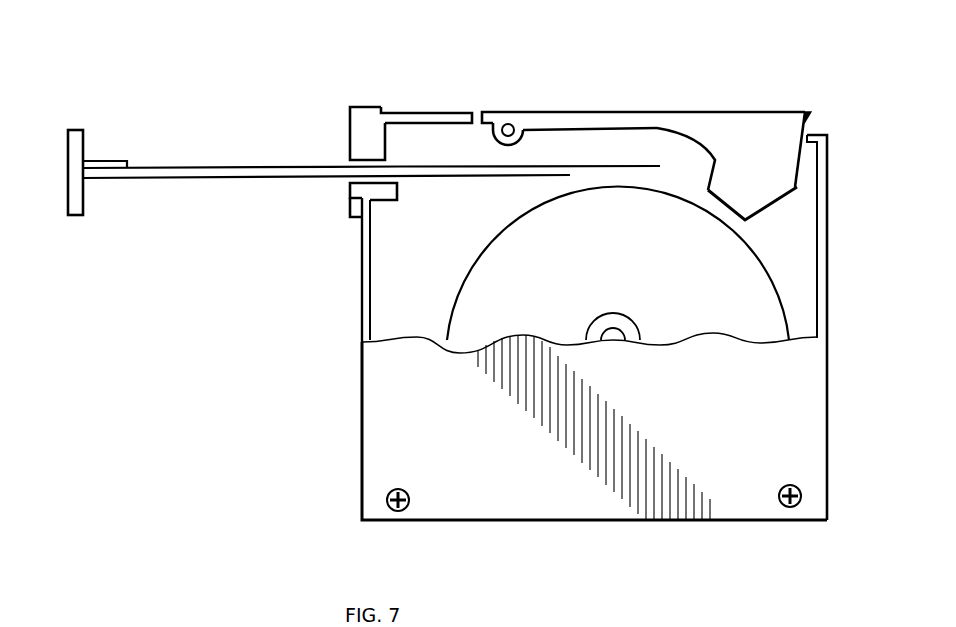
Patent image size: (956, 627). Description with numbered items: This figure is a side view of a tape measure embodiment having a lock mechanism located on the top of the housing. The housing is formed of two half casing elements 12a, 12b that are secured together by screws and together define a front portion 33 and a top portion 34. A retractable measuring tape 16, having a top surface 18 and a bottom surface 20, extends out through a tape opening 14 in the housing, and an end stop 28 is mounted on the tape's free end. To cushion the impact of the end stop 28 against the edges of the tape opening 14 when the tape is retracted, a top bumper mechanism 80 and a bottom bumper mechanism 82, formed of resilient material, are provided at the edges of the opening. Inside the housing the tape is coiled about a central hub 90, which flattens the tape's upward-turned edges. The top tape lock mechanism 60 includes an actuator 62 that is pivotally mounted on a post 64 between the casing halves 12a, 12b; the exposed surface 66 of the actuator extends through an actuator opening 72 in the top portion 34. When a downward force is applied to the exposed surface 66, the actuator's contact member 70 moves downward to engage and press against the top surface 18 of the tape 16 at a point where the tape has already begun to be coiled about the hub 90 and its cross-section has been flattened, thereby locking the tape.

The half casing element 12a is at (793, 455).
The half casing element 12b is at (383, 302).
The tape opening 14 is at (345, 166).
The retractable measuring tape 16 is at (172, 168).
The top surface 18 is at (437, 165).
The bottom surface 20 is at (200, 180).
The end stop 28 is at (73, 190).
The front portion 33 is at (360, 450).
The top portion 34 is at (817, 135).
The top tape lock mechanism 60 is at (807, 121).
The actuator 62 is at (716, 137).
The post 64 is at (514, 125).
The exposed surface 66 is at (650, 111).
The contact member 70 is at (755, 208).
The actuator opening 72 is at (476, 112).
The top bumper mechanism 80 is at (366, 118).
The bottom bumper mechanism 82 is at (352, 206).
The central hub 90 is at (613, 338).